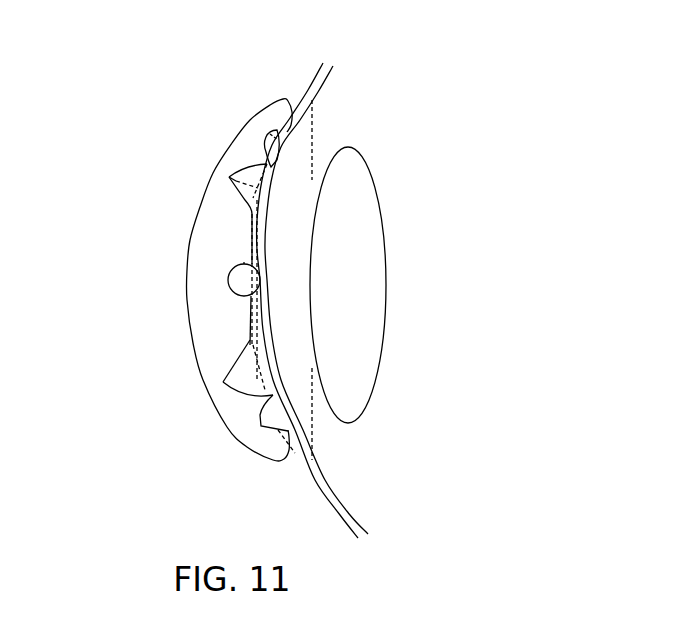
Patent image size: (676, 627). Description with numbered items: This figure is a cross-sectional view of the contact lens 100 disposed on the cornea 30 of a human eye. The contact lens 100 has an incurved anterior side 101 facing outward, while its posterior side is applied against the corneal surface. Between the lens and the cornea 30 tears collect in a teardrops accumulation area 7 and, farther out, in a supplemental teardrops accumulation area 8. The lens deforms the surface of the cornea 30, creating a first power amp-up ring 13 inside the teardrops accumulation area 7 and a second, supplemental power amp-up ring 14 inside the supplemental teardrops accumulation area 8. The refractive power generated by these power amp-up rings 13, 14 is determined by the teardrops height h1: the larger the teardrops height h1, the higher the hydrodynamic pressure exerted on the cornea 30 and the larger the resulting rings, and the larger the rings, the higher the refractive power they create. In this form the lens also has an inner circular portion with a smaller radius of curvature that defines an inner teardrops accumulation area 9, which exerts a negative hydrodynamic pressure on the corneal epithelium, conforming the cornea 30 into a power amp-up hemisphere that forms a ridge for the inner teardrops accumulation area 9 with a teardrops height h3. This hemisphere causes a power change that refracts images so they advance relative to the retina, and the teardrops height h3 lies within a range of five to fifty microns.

The contact lens 100 is at (175, 445).
The incurved anterior side 101 is at (202, 378).
The second power amp-up ring 14 is at (267, 133).
The supplemental teardrops accumulation area 8 is at (275, 143).
The teardrops accumulation area 7 is at (247, 174).
The teardrops height h1 is at (229, 178).
The first power amp-up ring 13 is at (255, 183).
The inner teardrops accumulation area 9 is at (237, 292).
The teardrops height h3 is at (235, 285).
The cornea 30 is at (307, 456).